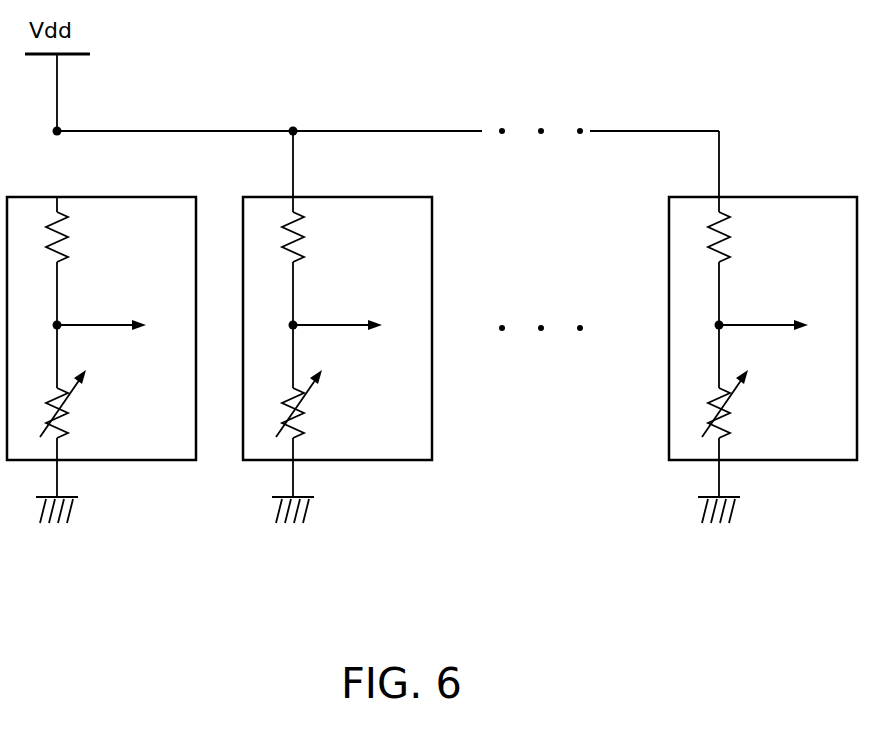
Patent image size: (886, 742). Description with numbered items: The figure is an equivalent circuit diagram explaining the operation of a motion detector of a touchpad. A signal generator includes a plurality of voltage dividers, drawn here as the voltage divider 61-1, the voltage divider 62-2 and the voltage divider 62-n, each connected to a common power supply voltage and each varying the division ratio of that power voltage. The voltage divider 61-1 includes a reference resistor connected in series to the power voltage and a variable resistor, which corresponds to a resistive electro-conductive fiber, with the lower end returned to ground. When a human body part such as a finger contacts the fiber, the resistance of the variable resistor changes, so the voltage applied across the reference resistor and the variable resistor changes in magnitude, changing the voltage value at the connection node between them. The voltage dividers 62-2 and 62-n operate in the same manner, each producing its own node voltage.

The voltage divider 61-1 is at (153, 461).
The second voltage generating unit 62-2 is at (364, 461).
The n-th voltage generating unit 62-n is at (800, 461).